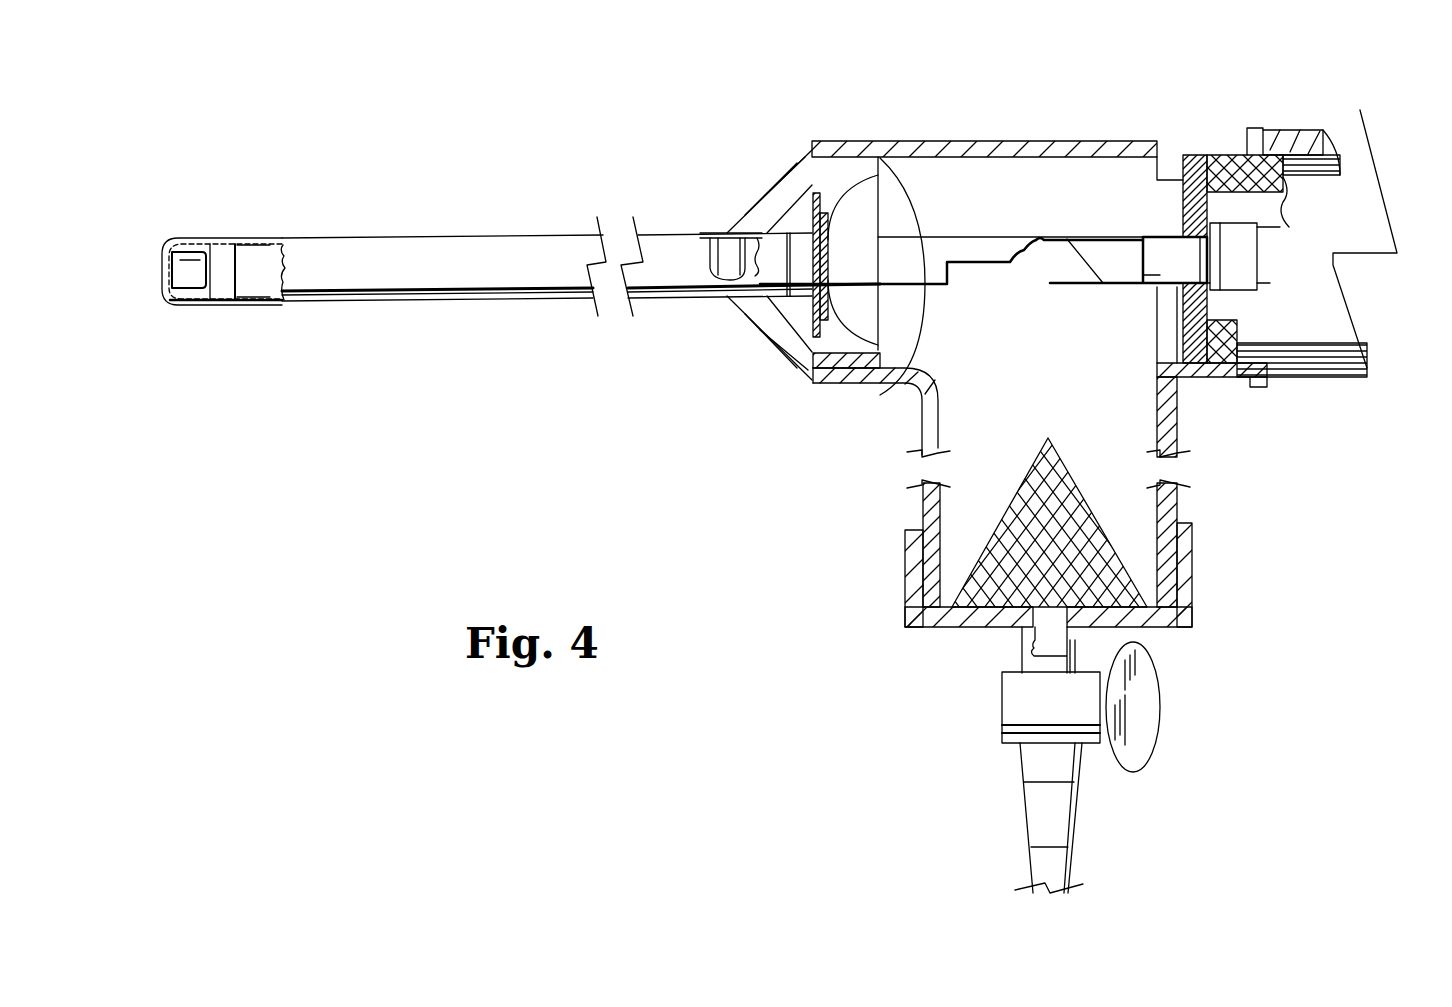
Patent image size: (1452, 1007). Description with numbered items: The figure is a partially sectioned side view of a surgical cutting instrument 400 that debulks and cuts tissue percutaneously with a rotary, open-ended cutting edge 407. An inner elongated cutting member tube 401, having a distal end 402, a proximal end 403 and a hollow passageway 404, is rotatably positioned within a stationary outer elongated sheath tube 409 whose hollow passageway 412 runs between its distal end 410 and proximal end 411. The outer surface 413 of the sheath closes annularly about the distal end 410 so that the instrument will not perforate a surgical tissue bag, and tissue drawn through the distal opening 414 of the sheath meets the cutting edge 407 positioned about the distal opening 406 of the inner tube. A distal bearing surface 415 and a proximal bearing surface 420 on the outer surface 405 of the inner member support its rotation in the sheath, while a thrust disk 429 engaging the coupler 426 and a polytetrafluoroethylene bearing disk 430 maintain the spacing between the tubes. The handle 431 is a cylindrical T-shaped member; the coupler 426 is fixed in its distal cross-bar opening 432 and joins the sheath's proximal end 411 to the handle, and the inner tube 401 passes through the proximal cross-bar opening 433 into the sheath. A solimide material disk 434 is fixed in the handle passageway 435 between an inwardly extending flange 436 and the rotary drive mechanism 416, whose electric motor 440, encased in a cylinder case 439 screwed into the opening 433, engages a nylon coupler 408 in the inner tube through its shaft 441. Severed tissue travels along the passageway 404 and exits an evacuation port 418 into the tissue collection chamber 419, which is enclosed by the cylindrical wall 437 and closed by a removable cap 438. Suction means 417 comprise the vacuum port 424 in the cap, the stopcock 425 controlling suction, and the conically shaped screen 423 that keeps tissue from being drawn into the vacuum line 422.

The surgical cutting instrument 400 is at (740, 440).
The inner elongated cutting member tube 401 is at (425, 248).
The distal end 402 is at (166, 233).
The proximal end 403 is at (1215, 225).
The hollow passageway 404 is at (272, 270).
The outer surface 405 is at (195, 305).
The distal opening 406 is at (155, 265).
The rotary cutting edge 407 is at (225, 248).
The nylon coupler 408 is at (1262, 150).
The outer elongated sheath tube 409 is at (427, 250).
The distal end 410 is at (163, 312).
The proximal end 411 is at (703, 313).
The hollow passageway 412 is at (228, 243).
The outer surface 413 is at (578, 297).
The distal opening 414 is at (160, 284).
The distal bearing surface 415 is at (198, 284).
The rotary drive mechanism 416 is at (1340, 383).
The vacuum control means 417 is at (1188, 753).
The evacuation port 418 is at (985, 283).
The tissue collection chamber 419 is at (983, 410).
The proximal bearing surface 420 is at (723, 240).
The vacuum line 422 is at (1073, 863).
The conically shaped screen 423 is at (1065, 470).
The vacuum port 424 is at (1050, 625).
The stopcock 425 is at (1160, 710).
The coupler 426 is at (757, 322).
The thrust disk 429 is at (830, 215).
The polytetrafluoroethylene bearing disk 430 is at (836, 200).
The handle 431 is at (1268, 567).
The distal cross-bar opening 432 is at (806, 170).
The proximal cross-bar opening 433 is at (1267, 383).
The solimide material disk 434 is at (1205, 175).
The passageway 435 is at (1057, 177).
The inwardly extending flange 436 is at (1160, 172).
The cylindrical wall 437 is at (923, 508).
The removable cap 438 is at (913, 628).
The cylinder case 439 is at (1300, 165).
The electric motor 440 is at (1345, 172).
The shaft 441 is at (1263, 283).